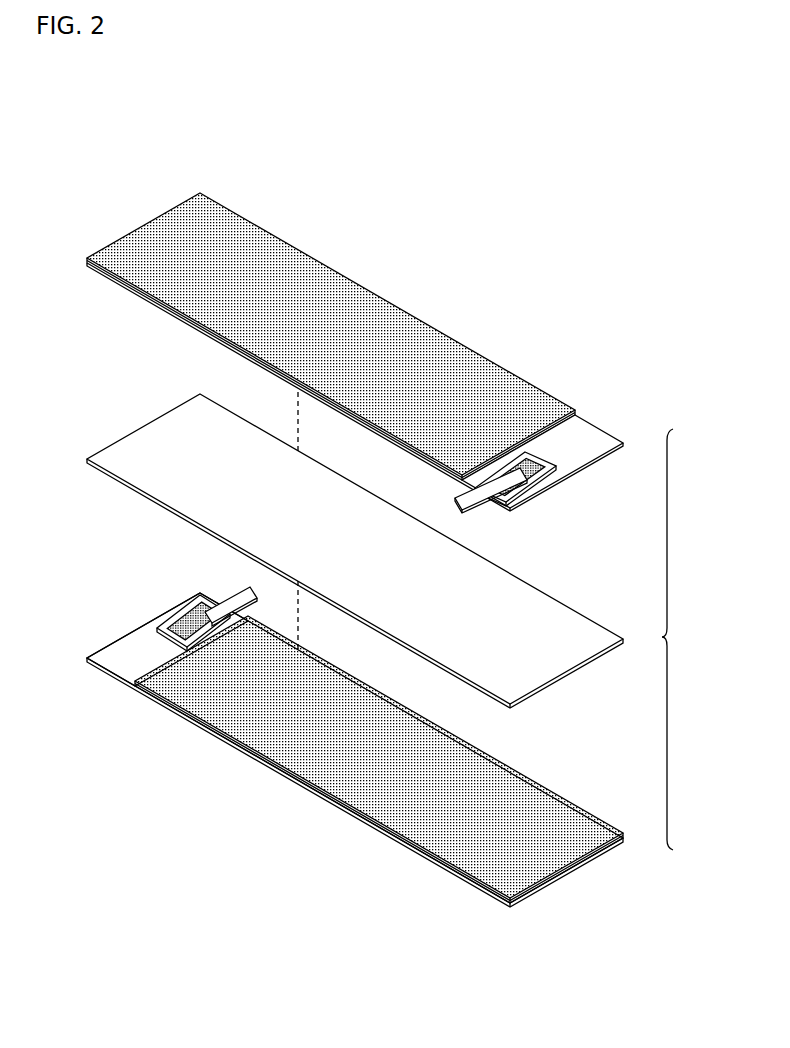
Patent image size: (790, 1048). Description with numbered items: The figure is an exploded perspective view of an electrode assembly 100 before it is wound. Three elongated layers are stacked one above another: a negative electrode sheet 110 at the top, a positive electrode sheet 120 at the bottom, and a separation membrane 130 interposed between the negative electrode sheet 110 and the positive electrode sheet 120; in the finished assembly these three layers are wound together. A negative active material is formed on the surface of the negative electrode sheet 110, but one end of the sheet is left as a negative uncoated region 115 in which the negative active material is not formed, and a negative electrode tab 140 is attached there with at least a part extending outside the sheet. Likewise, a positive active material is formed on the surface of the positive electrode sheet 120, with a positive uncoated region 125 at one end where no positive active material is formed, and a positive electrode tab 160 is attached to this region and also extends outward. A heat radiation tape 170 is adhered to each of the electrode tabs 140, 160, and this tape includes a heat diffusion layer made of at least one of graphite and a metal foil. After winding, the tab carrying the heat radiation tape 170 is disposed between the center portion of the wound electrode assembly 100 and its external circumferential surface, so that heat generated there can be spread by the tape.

The electrode assembly 100 is at (686, 639).
The negative electrode sheet 110 is at (374, 352).
The negative uncoated region 115 is at (598, 437).
The positive electrode sheet 120 is at (330, 742).
The positive uncoated region 125 is at (112, 662).
The separation membrane 130 is at (603, 635).
The negative electrode tab 140 is at (480, 502).
The positive electrode tab 160 is at (240, 598).
The heat radiation tape 170 is at (522, 452).